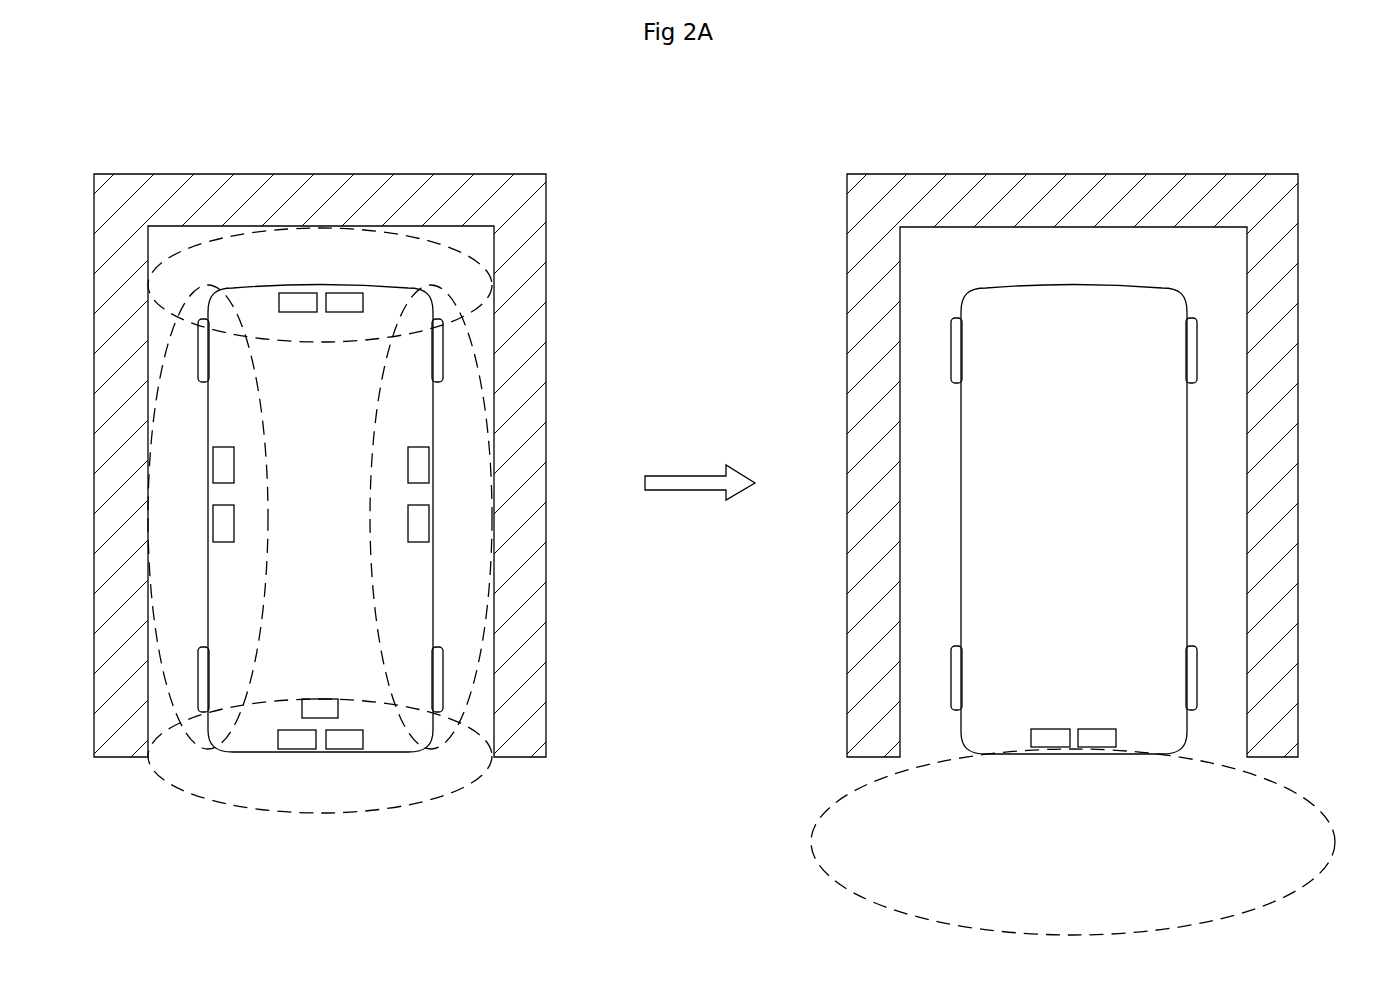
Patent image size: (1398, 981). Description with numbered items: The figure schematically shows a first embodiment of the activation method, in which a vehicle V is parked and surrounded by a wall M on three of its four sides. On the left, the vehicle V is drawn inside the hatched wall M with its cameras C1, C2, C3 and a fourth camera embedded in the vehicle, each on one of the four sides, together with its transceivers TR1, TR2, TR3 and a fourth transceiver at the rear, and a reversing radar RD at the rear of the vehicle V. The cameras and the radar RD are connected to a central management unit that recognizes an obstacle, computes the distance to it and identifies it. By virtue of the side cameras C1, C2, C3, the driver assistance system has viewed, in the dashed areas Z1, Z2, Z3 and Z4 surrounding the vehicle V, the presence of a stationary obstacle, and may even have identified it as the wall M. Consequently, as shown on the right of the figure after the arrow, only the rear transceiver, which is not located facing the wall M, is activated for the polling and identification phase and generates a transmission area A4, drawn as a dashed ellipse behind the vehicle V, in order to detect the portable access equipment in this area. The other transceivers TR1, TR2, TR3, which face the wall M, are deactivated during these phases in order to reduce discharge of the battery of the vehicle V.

The wall M is at (163, 185).
The vehicle V is at (244, 757).
The area Z1 is at (170, 333).
The area Z2 is at (472, 333).
The area Z3 is at (432, 238).
The area Z4 is at (440, 800).
The camera C1 is at (213, 463).
The camera C2 is at (429, 463).
The camera C3 is at (297, 292).
The transceiver TR1 is at (213, 520).
The transceiver TR2 is at (429, 520).
The transceiver TR3 is at (345, 292).
The reversing radar RD is at (340, 706).
The transmission area A4 is at (831, 811).